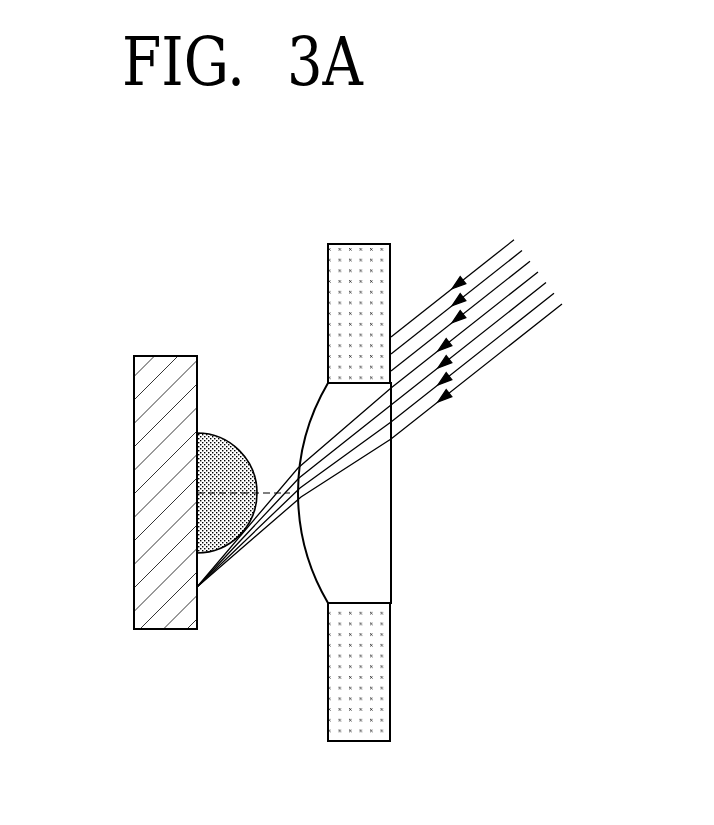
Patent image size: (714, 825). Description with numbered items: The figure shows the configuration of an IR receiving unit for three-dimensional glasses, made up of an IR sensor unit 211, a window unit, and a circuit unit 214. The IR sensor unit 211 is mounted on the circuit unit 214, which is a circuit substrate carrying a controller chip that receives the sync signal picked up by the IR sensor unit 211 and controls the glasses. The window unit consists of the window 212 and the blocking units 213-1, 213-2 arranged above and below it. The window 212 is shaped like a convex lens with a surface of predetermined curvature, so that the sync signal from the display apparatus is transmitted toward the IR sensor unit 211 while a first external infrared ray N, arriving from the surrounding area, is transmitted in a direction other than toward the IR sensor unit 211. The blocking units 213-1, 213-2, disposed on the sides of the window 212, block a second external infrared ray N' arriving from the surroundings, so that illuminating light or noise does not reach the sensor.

The IR sensor unit 211 is at (222, 448).
The window 212 is at (378, 482).
The blocking unit 213-1 is at (382, 262).
The blocking unit 213-2 is at (377, 683).
The circuit unit 214 is at (143, 562).
The first external infrared ray N is at (398, 417).
The second external infrared ray N' is at (485, 287).